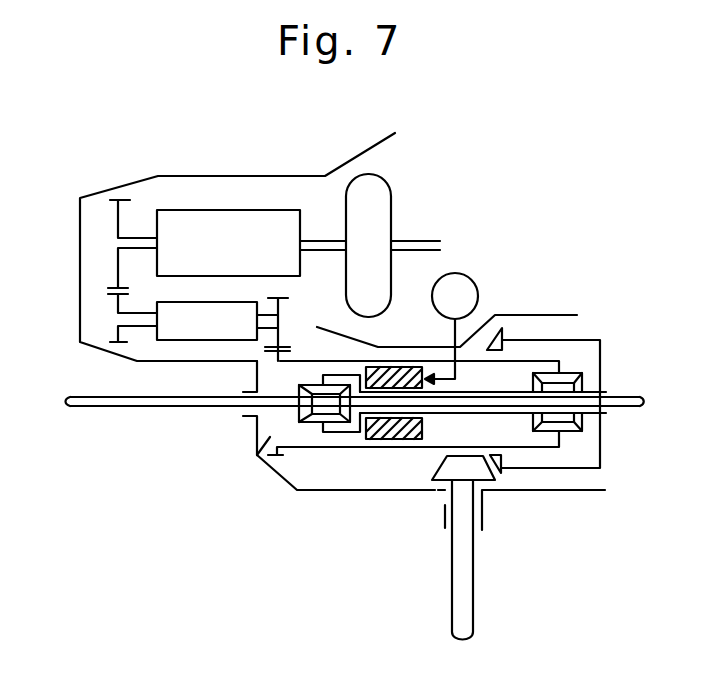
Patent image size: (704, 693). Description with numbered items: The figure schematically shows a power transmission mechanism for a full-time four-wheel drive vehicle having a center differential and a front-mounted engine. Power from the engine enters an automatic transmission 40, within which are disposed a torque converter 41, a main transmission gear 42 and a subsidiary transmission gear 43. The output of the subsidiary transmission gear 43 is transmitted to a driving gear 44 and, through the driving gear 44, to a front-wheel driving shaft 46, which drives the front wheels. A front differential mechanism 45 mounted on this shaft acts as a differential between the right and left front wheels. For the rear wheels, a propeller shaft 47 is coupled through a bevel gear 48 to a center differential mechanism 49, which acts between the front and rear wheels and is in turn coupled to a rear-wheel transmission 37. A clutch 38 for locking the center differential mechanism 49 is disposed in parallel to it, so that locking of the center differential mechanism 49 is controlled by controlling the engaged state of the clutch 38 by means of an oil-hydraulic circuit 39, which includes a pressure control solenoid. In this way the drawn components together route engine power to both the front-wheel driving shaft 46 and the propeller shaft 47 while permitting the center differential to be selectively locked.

The rear-wheel transmission 37 is at (331, 360).
The clutch 38 is at (402, 365).
The oil-hydraulic circuit (pressure control solenoid) 39 is at (477, 283).
The automatic transmission 40 is at (78, 263).
The torque converter 41 is at (392, 200).
The main transmission gear 42 is at (298, 243).
The subsidiary transmission gear 43 is at (207, 321).
The driving gear 44 is at (257, 455).
The front differential mechanism 45 is at (313, 424).
The front-wheel driving shaft 46 is at (618, 398).
The propeller shaft 47 is at (472, 575).
The bevel gear 48 is at (515, 481).
The center differential mechanism 49 is at (560, 375).